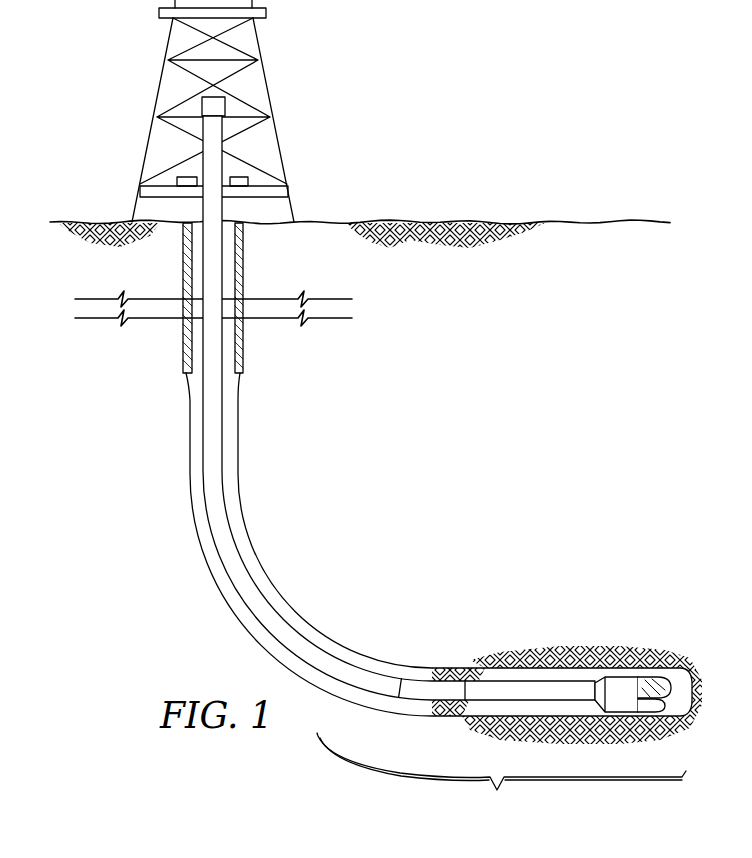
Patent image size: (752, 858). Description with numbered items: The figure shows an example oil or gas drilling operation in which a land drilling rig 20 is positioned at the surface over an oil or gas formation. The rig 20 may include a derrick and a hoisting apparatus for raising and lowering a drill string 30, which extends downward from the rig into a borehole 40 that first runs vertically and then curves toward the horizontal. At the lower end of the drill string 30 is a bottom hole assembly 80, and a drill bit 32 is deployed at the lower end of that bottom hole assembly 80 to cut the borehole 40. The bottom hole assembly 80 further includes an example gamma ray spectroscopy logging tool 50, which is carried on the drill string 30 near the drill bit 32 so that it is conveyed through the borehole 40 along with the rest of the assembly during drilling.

The drilling rig 20 is at (268, 88).
The drill string 30 is at (211, 452).
The borehole 40 is at (237, 419).
The gamma ray spectroscopy logging tool 50 is at (437, 689).
The drill bit 32 is at (619, 681).
The bottom hole assembly 80 is at (501, 779).